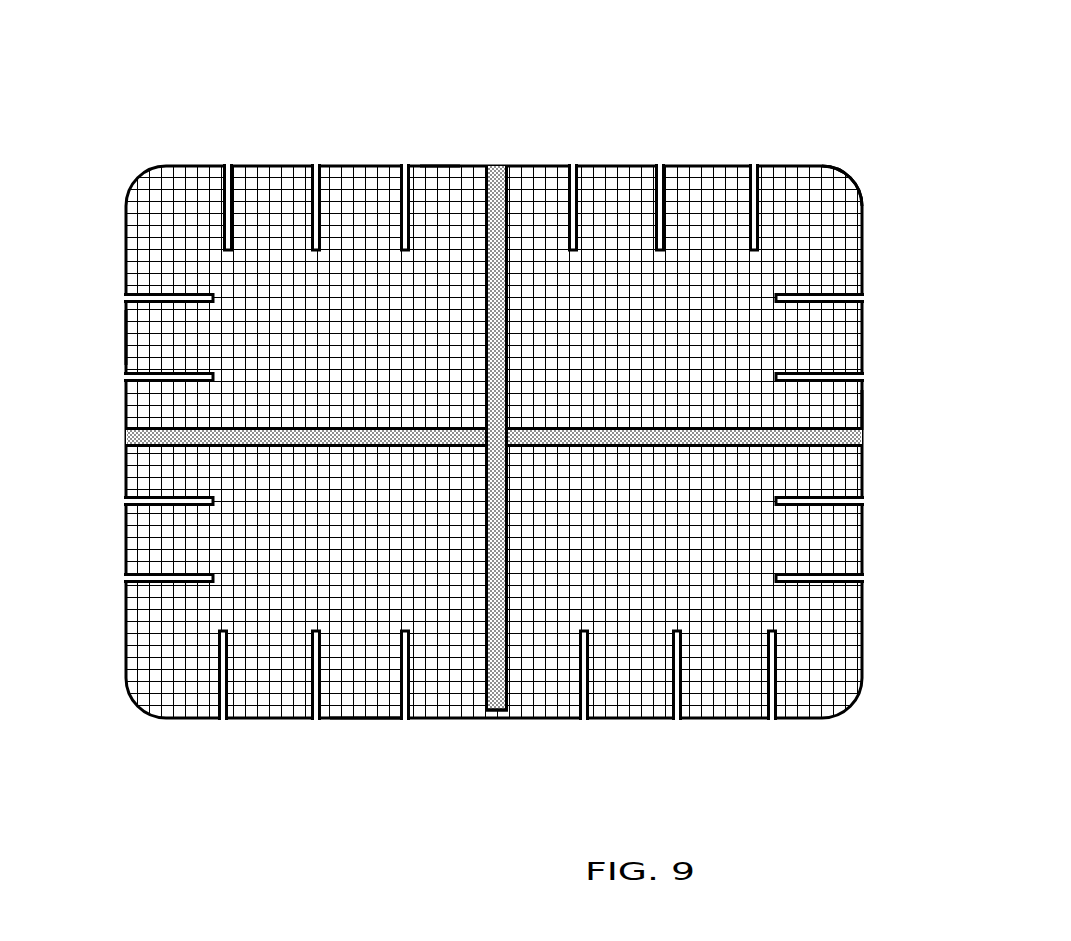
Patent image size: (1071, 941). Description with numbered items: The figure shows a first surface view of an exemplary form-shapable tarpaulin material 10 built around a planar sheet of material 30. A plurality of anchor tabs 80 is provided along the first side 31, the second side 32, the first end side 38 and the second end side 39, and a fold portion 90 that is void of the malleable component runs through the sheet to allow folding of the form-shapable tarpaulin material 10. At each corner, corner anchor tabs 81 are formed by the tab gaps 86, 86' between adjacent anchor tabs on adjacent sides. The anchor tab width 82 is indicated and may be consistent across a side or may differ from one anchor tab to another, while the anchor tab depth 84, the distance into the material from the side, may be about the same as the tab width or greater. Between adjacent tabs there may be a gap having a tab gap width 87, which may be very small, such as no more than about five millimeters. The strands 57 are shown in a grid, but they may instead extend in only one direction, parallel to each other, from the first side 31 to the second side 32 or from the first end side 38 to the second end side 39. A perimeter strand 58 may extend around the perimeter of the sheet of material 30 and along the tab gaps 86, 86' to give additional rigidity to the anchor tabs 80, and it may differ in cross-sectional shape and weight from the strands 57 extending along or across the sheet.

The form-shapable tarpaulin material 10 is at (490, 424).
The planar sheet of material 30 is at (545, 175).
The first side 31 is at (436, 160).
The second side 32 is at (375, 724).
The first end side 38 is at (120, 352).
The second end side 39 is at (866, 408).
The strands 57 is at (690, 185).
The perimeter strand 58 is at (475, 724).
The anchor tabs 80 is at (612, 185).
The corner anchor tabs 81 is at (838, 185).
The anchor tab width 82 is at (402, 160).
The anchor tab depth 84 is at (143, 243).
The tab gap 86 is at (693, 142).
The tab gap 86' is at (859, 256).
The tab gap width 87 is at (270, 98).
The fold portion 90 is at (488, 165).